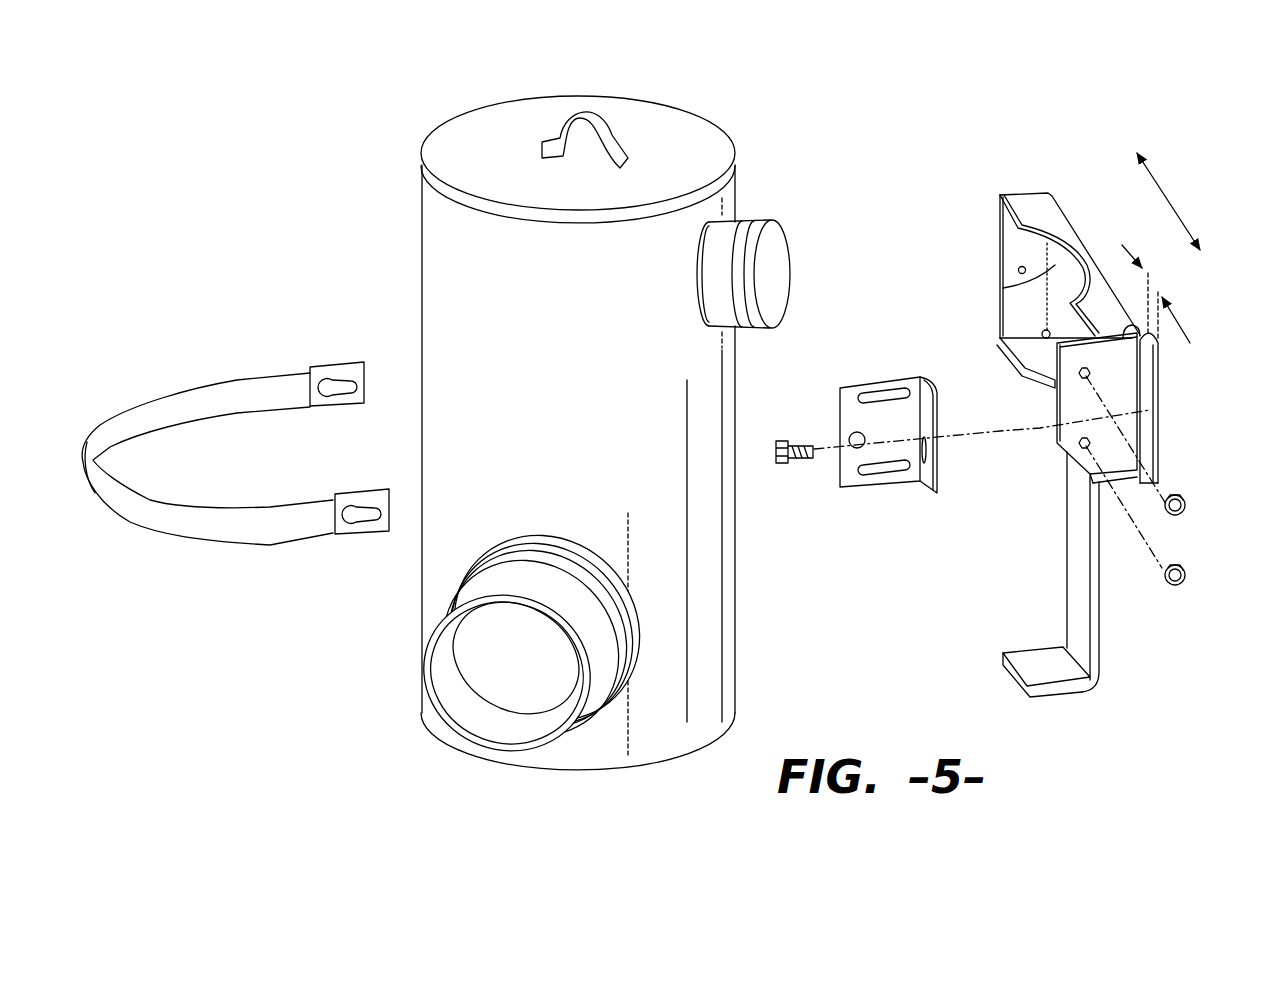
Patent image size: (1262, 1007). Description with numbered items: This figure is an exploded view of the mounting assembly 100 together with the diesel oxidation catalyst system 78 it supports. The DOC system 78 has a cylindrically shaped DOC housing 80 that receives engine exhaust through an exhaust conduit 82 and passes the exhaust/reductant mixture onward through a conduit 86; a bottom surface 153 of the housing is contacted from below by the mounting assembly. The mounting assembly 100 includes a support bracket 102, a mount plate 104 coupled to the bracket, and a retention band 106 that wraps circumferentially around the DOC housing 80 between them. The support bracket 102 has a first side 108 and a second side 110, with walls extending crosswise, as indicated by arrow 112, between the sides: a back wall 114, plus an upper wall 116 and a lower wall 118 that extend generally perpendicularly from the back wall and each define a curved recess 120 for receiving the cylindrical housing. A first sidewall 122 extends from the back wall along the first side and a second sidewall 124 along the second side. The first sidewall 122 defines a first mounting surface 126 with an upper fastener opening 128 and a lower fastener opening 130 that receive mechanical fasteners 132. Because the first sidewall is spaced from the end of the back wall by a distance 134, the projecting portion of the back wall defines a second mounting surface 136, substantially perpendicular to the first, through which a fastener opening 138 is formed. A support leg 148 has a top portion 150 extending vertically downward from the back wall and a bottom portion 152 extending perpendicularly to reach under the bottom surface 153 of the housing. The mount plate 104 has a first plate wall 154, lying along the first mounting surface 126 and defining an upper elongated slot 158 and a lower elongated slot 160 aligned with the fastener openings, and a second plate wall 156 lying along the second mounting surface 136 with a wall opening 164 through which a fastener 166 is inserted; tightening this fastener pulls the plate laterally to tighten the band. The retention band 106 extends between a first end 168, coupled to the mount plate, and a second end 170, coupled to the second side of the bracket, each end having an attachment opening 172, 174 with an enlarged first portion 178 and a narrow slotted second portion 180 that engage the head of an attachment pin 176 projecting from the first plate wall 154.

The diesel oxidation catalyst (DOC) system 78 is at (408, 197).
The DOC housing 80 is at (437, 290).
The exhaust conduit 82 is at (768, 223).
The conduit 86 is at (452, 600).
The mounting assembly 100 is at (1085, 142).
The support bracket 102 is at (1031, 279).
The mount plate 104 is at (877, 417).
The retention band 106 is at (194, 368).
The first side 108 is at (1050, 438).
The second side 110 is at (983, 210).
The arrow 112 is at (1173, 197).
The back wall 114 is at (1003, 288).
The upper wall 116 is at (1027, 204).
The lower wall 118 is at (1003, 353).
The curved recess 120 is at (1070, 232).
The first sidewall 122 is at (1052, 397).
The second sidewall 124 is at (997, 238).
The first mounting surface 126 is at (1068, 452).
The upper fastener opening 128 is at (1090, 371).
The lower fastener opening 130 is at (1143, 467).
The mechanical fasteners 132 is at (1183, 507).
The distance 134 is at (1190, 343).
The second mounting surface 136 is at (1150, 412).
The fastener opening 138 is at (1146, 437).
The support leg 148 is at (1034, 584).
The top portion 150 is at (1077, 550).
The bottom portion 152 is at (1060, 690).
The bottom surface 153 is at (607, 771).
The first plate wall 154 is at (850, 402).
The second plate wall 156 is at (943, 481).
The upper elongated slot 158 is at (857, 395).
The lower elongated slot 160 is at (893, 478).
The wall opening 164 is at (927, 453).
The fastener 166 is at (803, 458).
The first end 168 is at (346, 531).
The second end 170 is at (321, 402).
The attachment opening 172 is at (355, 497).
The attachment opening 174 is at (333, 367).
The attachment pin 176 is at (849, 438).
The first portion 178 is at (337, 405).
The second portion 180 is at (347, 374).